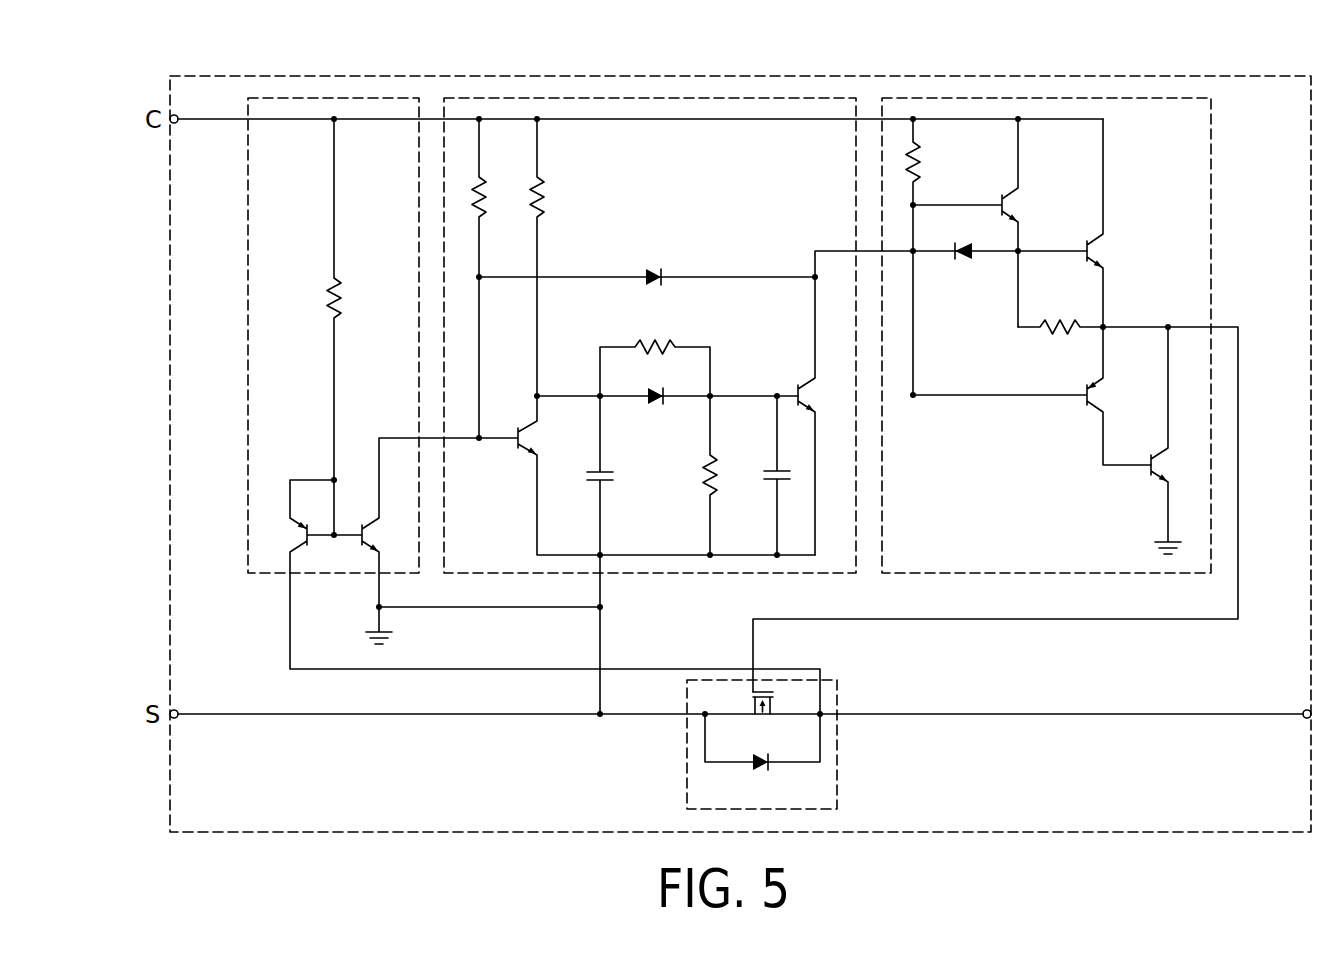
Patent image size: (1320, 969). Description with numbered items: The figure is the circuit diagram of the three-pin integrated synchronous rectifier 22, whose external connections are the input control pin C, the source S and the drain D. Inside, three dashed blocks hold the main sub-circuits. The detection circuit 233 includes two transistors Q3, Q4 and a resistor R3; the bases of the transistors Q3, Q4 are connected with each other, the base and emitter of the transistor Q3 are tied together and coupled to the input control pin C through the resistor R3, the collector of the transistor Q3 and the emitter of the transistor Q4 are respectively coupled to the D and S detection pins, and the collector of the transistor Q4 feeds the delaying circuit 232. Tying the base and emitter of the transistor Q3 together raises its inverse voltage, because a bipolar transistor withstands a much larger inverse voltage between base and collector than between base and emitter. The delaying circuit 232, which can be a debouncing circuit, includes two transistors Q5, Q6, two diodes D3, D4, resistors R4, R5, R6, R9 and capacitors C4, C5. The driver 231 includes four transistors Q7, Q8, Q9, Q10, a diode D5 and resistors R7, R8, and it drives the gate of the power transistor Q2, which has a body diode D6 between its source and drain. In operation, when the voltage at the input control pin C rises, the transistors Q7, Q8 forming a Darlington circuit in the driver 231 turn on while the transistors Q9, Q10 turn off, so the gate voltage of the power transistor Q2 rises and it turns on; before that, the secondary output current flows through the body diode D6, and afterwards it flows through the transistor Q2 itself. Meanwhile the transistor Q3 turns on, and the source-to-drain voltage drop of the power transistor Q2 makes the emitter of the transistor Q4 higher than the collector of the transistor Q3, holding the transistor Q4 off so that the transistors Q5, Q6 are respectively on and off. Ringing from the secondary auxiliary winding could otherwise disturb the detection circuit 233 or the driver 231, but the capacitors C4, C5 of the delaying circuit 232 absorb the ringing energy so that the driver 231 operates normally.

The three-pin integrated synchronous rectifier 22 is at (170, 224).
The driver 231 is at (1140, 97).
The delaying circuit 232 is at (738, 97).
The detection circuit 233 is at (348, 97).
The resistor R3 is at (317, 327).
The resistor R4 is at (493, 278).
The resistor R5 is at (552, 257).
The resistor R6 is at (655, 353).
The resistor R7 is at (930, 257).
The resistor R8 is at (995, 488).
The resistor R9 is at (692, 475).
The capacitor C4 is at (588, 555).
The capacitor C5 is at (767, 475).
The diode D3 is at (657, 413).
The diode D4 is at (647, 261).
The diode D5 is at (1000, 269).
The body diode D6 is at (762, 759).
The power transistor Q2 is at (779, 743).
The transistor Q3 is at (539, 597).
The transistor Q4 is at (467, 541).
The transistor Q5 is at (647, 475).
The transistor Q6 is at (855, 403).
The transistor Q7 is at (980, 223).
The transistor Q8 is at (1111, 223).
The transistor Q9 is at (1032, 396).
The transistor Q10 is at (1147, 440).